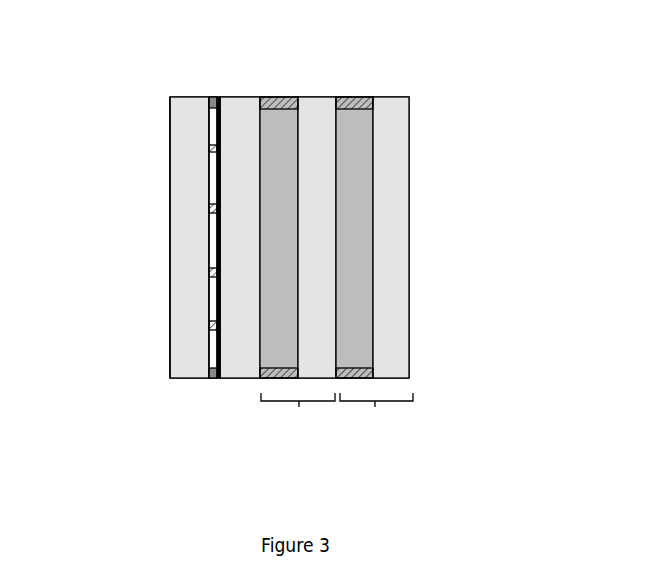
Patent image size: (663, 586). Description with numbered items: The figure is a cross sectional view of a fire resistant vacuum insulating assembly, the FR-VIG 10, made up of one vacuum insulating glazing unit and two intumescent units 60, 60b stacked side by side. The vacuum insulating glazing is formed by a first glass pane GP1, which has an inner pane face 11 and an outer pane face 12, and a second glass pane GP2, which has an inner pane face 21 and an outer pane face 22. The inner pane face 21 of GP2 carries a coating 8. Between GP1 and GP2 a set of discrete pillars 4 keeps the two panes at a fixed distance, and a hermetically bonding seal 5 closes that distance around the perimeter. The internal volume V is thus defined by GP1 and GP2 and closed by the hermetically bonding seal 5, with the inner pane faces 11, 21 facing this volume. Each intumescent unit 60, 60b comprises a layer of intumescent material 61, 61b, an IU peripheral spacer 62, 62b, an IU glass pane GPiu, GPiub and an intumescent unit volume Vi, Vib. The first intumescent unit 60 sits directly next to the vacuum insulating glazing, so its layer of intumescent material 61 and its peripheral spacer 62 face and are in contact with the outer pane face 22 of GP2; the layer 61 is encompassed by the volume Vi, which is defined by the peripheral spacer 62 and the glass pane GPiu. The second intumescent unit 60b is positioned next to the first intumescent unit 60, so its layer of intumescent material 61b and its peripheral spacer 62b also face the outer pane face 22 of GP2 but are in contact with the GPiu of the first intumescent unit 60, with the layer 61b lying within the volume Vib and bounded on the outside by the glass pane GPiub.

The fire resistant vacuum insulating glazing (FR-VIG) 10 is at (176, 45).
The first glass pane GP1 is at (187, 127).
The second glass pane GP2 is at (237, 128).
The intumescent unit glass pane GPiu is at (313, 160).
The intumescent unit glass pane of second intumescent unit GPiub is at (388, 170).
The inner pane face 11 is at (209, 175).
The outer pane face 12 is at (170, 202).
The inner pane face 21 is at (213, 251).
The outer pane face 22 is at (260, 291).
The discrete pillars 4 is at (213, 324).
The hermetically bonding seal 5 is at (221, 101).
The coating 8 is at (213, 348).
The internal volume V is at (213, 298).
The layer of intumescent material 61 is at (275, 243).
The layer of intumescent material 61b is at (343, 254).
The intumescent unit volume Vi is at (277, 304).
The intumescent unit volume Vib is at (345, 323).
The IU peripheral spacer 62 is at (298, 372).
The IU peripheral spacer 62b is at (373, 372).
The intumescent unit 60 is at (301, 410).
The second intumescent unit 60b is at (376, 410).